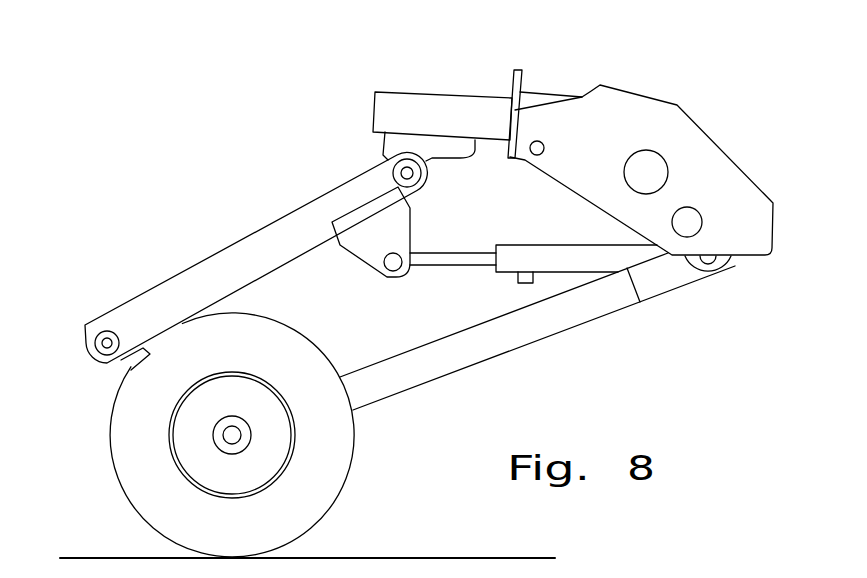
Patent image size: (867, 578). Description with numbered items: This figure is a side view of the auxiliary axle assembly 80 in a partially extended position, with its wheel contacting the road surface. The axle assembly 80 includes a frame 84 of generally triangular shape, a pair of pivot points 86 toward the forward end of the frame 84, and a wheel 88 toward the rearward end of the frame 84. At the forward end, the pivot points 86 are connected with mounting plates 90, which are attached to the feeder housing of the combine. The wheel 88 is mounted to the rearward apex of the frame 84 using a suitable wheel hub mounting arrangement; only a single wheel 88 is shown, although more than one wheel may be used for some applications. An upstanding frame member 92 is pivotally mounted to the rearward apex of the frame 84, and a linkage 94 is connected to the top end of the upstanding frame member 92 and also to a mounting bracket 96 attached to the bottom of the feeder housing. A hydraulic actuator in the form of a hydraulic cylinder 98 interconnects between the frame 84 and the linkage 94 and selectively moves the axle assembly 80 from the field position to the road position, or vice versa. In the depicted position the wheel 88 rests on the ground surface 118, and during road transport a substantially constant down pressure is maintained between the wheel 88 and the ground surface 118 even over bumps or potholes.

The axle assembly 80 is at (245, 163).
The frame 84 is at (665, 287).
The pivot points 86 is at (713, 268).
The wheel 88 is at (327, 508).
The mounting plates 90 is at (708, 142).
The upstanding frame member 92 is at (123, 360).
The linkage 94 is at (243, 240).
The mounting bracket 96 is at (447, 102).
The hydraulic cylinder 98 is at (533, 250).
The ground surface 118 is at (97, 558).